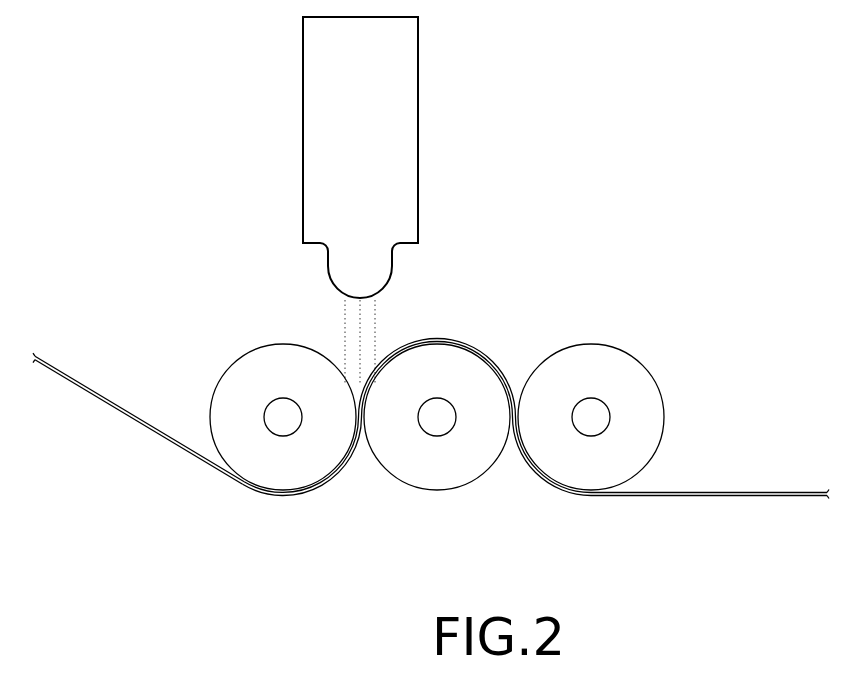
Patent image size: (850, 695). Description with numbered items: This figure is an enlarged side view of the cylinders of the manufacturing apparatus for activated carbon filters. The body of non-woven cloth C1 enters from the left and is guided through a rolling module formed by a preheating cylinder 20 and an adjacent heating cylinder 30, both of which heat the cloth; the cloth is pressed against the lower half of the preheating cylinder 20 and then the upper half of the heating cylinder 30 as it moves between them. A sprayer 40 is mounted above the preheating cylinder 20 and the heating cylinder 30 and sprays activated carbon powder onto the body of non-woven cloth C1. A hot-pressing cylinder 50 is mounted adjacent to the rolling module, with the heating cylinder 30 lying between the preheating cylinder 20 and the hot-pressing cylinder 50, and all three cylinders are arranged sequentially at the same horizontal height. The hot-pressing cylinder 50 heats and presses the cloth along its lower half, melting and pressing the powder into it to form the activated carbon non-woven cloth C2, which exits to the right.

The preheating cylinder 20 is at (257, 349).
The heating cylinder 30 is at (402, 491).
The sprayer 40 is at (415, 114).
The hot-pressing cylinder 50 is at (620, 346).
The body of non-woven cloth C1 is at (83, 383).
The activated carbon non-woven cloth C2 is at (748, 490).